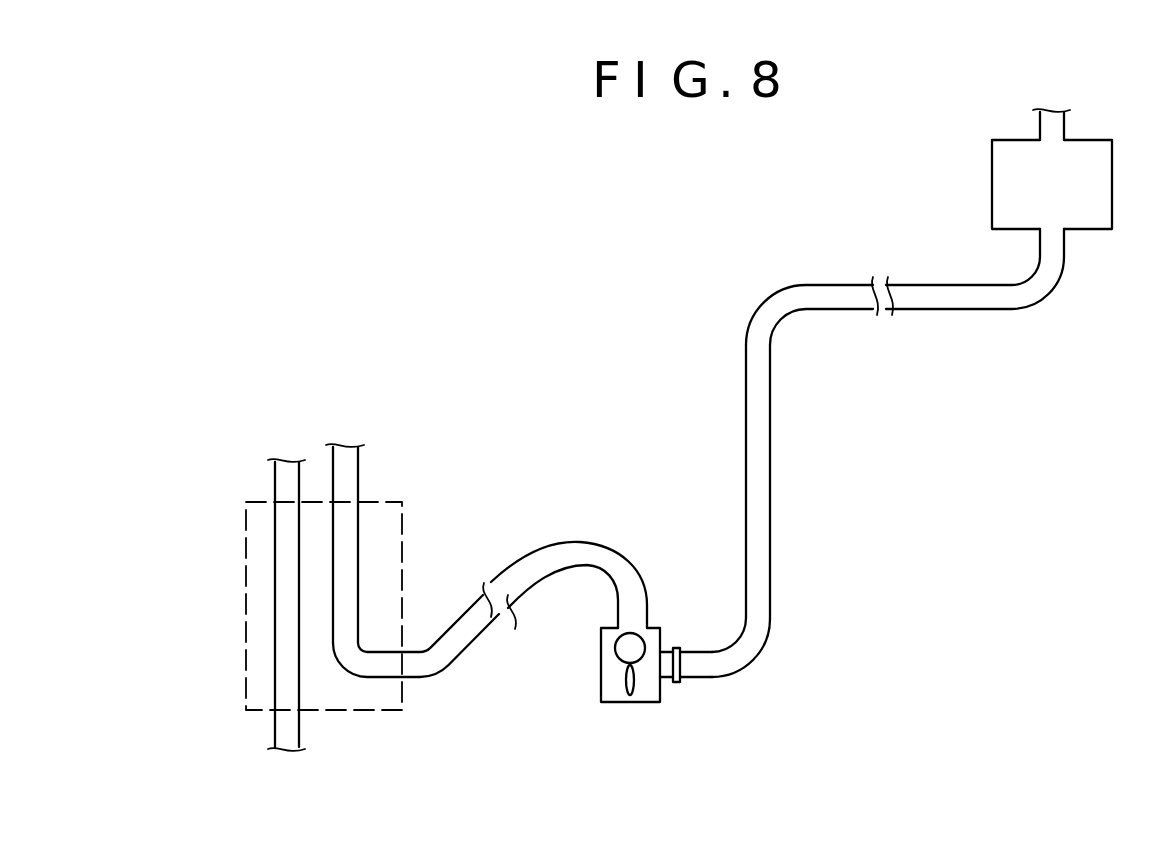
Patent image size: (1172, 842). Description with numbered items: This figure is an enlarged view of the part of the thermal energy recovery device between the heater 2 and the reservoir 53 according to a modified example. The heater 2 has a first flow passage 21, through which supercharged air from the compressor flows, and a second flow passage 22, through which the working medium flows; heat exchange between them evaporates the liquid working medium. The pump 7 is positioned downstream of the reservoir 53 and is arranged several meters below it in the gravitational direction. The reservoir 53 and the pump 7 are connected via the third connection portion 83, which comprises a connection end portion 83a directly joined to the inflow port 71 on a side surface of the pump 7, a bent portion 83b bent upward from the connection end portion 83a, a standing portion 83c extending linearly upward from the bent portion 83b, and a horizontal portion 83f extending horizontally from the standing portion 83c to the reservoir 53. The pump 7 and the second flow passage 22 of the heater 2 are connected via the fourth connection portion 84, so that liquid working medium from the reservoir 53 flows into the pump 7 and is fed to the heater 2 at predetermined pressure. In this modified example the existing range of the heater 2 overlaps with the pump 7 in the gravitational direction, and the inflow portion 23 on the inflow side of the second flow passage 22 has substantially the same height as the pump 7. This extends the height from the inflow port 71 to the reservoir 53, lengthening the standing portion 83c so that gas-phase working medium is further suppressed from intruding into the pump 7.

The heater 2 is at (367, 708).
The first flow passage 21 is at (275, 545).
The second flow passage 22 is at (358, 545).
The inflow portion 23 is at (402, 677).
The fourth connection portion 84 is at (553, 560).
The pump 7 is at (612, 692).
The inflow port 71 is at (662, 668).
The third connection portion 83 is at (862, 466).
The connection end portion 83a is at (702, 667).
The bent portion 83b is at (752, 647).
The standing portion 83c is at (757, 480).
The horizontal portion 83f is at (827, 309).
The reservoir 53 is at (1097, 175).